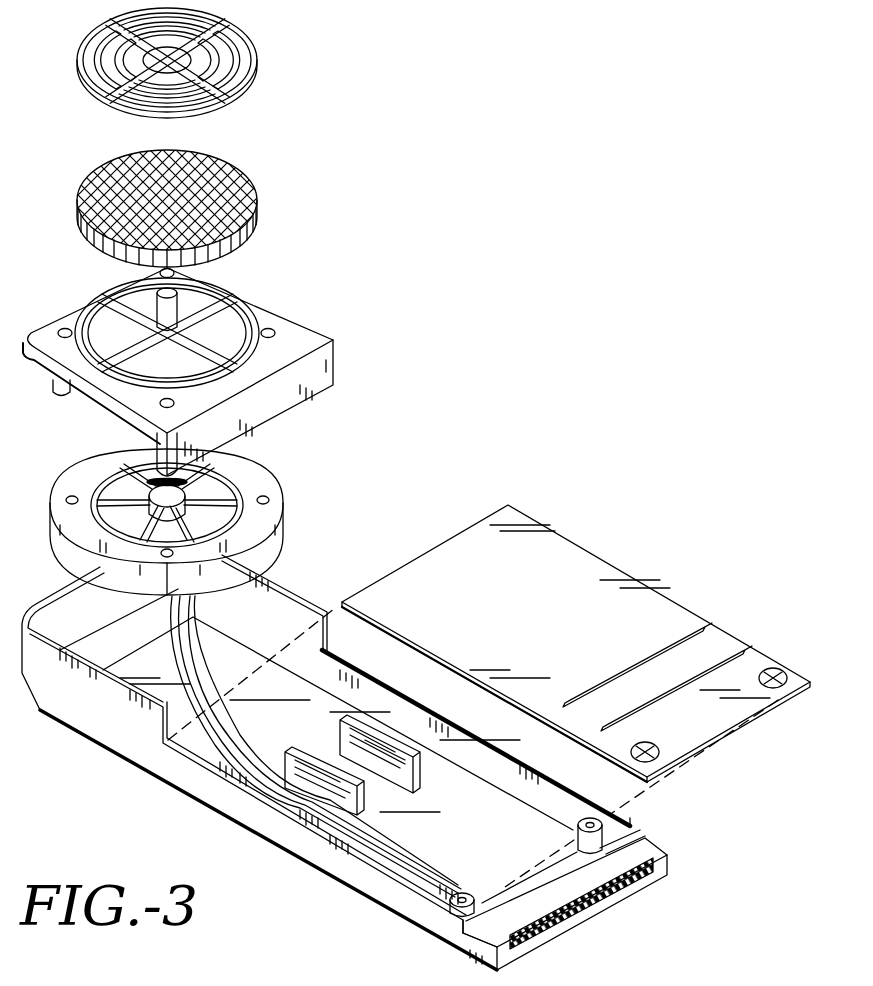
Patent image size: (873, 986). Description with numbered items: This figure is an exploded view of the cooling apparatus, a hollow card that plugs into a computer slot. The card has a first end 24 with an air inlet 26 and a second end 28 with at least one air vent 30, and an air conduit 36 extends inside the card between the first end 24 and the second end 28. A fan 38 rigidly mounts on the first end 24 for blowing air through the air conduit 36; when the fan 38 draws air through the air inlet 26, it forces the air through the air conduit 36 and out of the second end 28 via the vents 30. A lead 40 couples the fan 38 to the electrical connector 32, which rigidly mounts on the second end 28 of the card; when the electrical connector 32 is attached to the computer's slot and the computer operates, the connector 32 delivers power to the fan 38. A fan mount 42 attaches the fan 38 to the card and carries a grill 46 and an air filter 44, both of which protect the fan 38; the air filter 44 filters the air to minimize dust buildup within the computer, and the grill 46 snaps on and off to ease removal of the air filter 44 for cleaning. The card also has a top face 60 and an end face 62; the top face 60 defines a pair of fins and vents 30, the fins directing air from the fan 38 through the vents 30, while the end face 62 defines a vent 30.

The first end 24 is at (77, 713).
The air inlet 26 is at (237, 300).
The second end 28 is at (450, 933).
The air vent 30 is at (708, 626).
The electrical connector 32 is at (662, 870).
The air conduit 36 is at (307, 713).
The fan 38 is at (283, 508).
The lead 40 is at (290, 813).
The fan mount 42 is at (335, 352).
The air filter 44 is at (258, 210).
The grill 46 is at (258, 62).
The top face 60 is at (545, 573).
The end face 62 is at (655, 846).